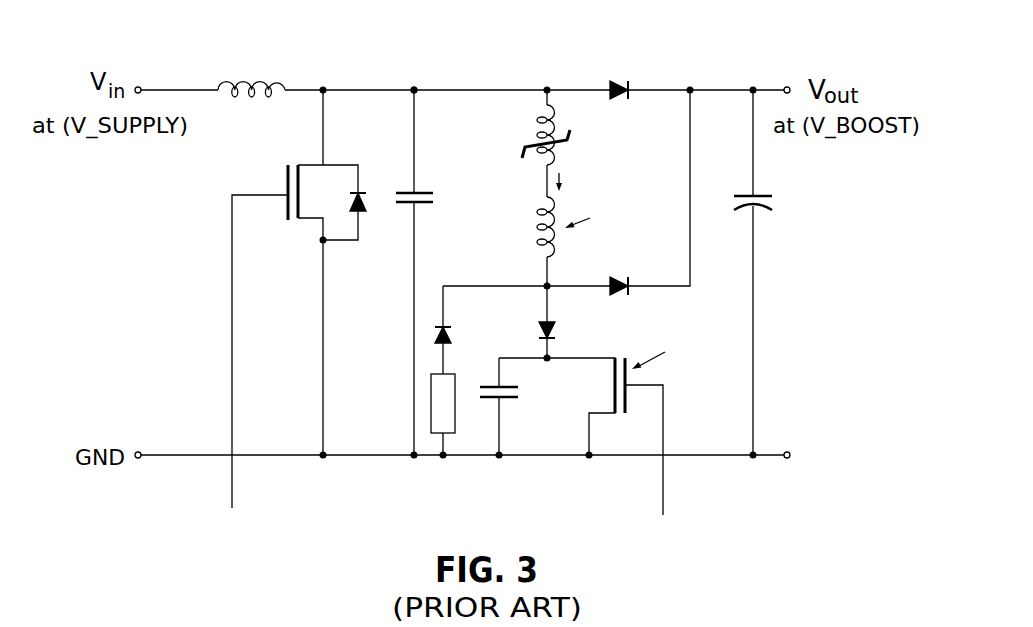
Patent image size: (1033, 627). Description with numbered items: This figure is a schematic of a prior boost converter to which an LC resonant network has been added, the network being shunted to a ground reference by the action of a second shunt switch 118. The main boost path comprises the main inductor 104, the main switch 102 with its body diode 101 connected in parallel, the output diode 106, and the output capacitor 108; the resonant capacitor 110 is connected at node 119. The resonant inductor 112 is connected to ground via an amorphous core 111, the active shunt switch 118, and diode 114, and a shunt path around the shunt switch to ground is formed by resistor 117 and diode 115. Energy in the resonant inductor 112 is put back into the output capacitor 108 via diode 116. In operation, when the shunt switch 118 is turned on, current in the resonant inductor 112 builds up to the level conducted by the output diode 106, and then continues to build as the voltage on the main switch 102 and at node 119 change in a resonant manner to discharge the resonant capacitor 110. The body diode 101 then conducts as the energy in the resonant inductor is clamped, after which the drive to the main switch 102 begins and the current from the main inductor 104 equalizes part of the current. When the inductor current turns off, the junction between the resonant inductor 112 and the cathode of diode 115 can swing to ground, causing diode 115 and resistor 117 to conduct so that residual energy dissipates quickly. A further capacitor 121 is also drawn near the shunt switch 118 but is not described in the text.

The diode 101 is at (362, 192).
The switch Q2 102 is at (304, 221).
The inductor L 104 is at (257, 77).
The diode 106 is at (618, 83).
The output capacitor 108 is at (745, 208).
The capacitor Cres 110 is at (428, 193).
The amorphous core 111 is at (542, 137).
The inductor Lres 112 is at (542, 213).
The diode 114 is at (556, 330).
The diode 115 is at (452, 334).
The diode 116 is at (619, 282).
The resistor 117 is at (449, 436).
The switch Q1 118 is at (607, 414).
The node 119 is at (421, 76).
The capacitor 121 is at (508, 403).